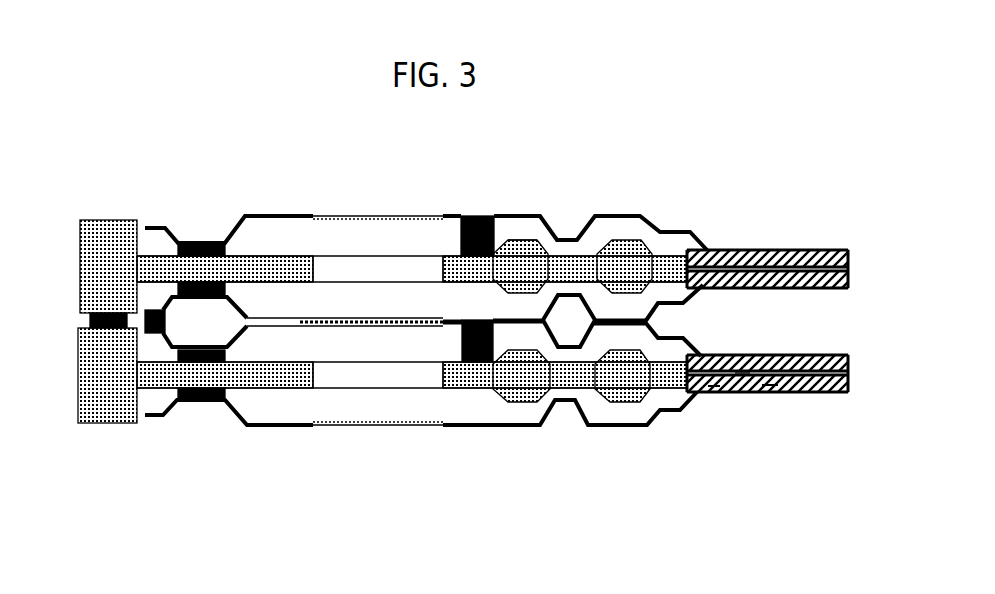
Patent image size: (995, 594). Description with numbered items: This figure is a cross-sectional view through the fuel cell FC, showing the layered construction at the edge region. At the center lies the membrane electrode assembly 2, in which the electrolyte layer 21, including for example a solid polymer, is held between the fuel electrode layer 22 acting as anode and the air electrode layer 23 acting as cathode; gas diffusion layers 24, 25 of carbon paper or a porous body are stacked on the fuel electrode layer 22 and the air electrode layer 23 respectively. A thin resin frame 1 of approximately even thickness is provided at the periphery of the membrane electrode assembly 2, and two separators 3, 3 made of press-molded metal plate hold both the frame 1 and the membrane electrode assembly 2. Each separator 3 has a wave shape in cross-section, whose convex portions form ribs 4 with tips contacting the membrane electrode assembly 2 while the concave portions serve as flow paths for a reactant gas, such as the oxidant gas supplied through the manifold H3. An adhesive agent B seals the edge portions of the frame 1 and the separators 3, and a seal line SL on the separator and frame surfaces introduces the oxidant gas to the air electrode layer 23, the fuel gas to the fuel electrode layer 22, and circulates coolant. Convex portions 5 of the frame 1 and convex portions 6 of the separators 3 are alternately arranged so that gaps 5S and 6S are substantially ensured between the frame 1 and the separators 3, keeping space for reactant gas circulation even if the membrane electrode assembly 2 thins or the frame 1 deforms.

The fuel cell FC is at (128, 211).
The adhesive agent B is at (178, 288).
The frame 1 is at (287, 263).
The membrane electrode assembly 2 is at (843, 250).
The electrolyte layer 21 is at (742, 372).
The fuel electrode layer 22 is at (770, 385).
The air electrode layer 23 is at (714, 386).
The gas diffusion layer 24 is at (798, 392).
The gas diffusion layer 25 is at (690, 393).
The separator 3 is at (293, 215).
The manifold for supplying oxidant gas H3 is at (387, 320).
The rib 4 is at (705, 249).
The convex portion 5 is at (640, 281).
The gap 5S is at (518, 229).
The convex portion 6 is at (597, 224).
The gap 6S is at (570, 240).
The seal line SL is at (462, 216).